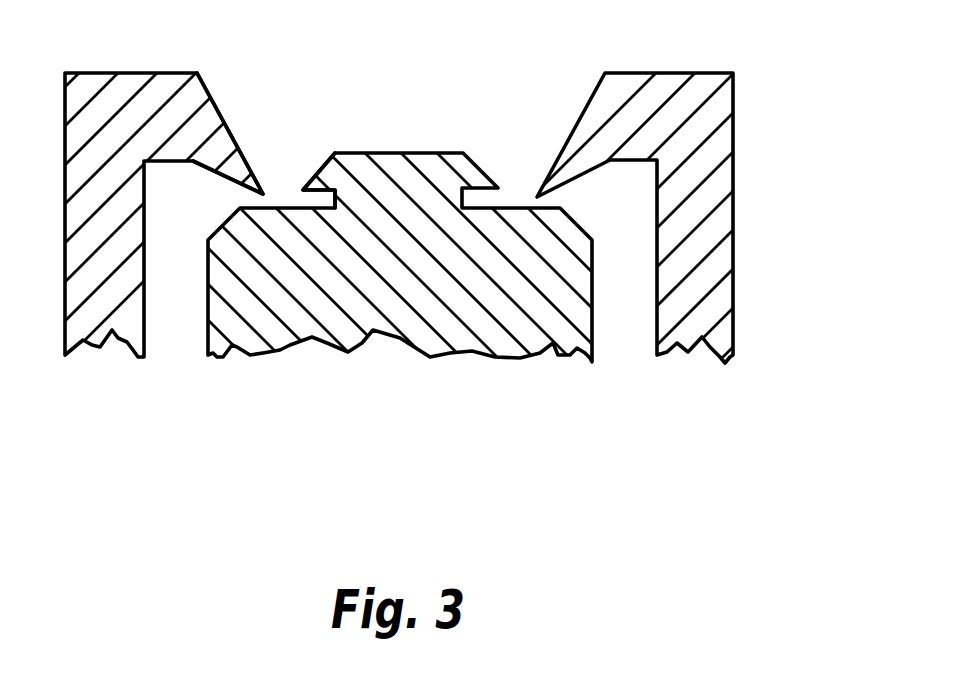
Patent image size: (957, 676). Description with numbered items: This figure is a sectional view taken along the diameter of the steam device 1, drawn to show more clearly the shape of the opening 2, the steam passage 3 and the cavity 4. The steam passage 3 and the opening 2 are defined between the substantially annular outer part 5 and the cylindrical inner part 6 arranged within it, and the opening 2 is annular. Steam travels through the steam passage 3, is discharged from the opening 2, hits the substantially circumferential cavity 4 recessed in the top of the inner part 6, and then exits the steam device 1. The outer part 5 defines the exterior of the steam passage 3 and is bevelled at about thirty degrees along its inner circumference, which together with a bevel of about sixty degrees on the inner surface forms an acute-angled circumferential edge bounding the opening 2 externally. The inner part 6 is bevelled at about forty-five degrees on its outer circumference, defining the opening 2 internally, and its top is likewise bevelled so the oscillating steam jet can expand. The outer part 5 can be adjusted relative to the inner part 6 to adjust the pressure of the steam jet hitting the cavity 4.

The steam device 1 is at (462, 264).
The opening 2 is at (236, 195).
The steam passage 3 is at (172, 262).
The cavity 4 is at (312, 202).
The outer part 5 is at (715, 222).
The inner part 6 is at (400, 181).